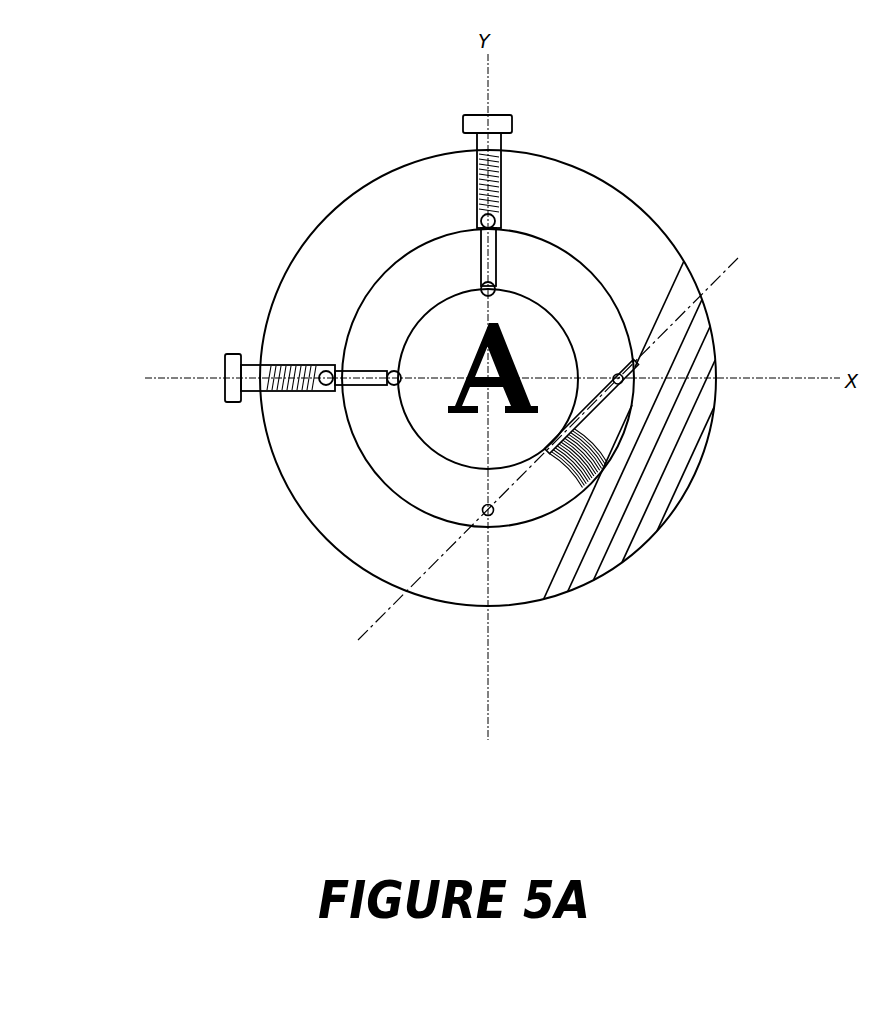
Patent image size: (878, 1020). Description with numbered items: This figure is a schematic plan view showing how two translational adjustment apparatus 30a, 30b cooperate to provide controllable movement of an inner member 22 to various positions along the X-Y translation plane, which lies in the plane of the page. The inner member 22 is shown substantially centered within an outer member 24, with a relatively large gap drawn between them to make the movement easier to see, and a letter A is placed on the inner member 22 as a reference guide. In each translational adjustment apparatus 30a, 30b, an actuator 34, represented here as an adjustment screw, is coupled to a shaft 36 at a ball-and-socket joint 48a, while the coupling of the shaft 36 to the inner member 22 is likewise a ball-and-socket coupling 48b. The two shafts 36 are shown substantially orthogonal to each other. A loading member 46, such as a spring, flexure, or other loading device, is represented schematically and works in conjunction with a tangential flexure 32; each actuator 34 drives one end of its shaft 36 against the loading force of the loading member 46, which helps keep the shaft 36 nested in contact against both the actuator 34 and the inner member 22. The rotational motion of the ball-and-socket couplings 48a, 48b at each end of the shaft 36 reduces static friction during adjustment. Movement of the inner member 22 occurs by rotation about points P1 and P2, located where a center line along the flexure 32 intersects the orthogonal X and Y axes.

The inner member 22 is at (430, 455).
The outer member 24 is at (646, 542).
The translational adjustment apparatus 30a is at (208, 440).
The translational adjustment apparatus 30b is at (418, 124).
The tangential flexure 32 is at (594, 402).
The actuator 34 is at (509, 116).
The shaft 36 is at (497, 259).
The loading member 46 is at (583, 436).
The ball-and-socket joint 48a is at (477, 217).
The ball-and-socket coupling 48b is at (483, 286).
The rotation point P1 is at (484, 505).
The rotation point P2 is at (616, 374).